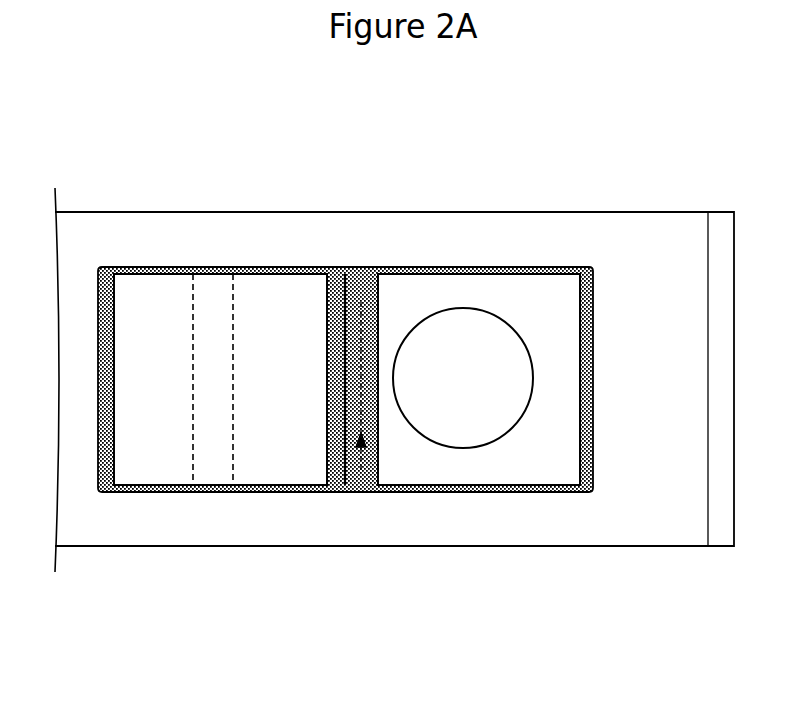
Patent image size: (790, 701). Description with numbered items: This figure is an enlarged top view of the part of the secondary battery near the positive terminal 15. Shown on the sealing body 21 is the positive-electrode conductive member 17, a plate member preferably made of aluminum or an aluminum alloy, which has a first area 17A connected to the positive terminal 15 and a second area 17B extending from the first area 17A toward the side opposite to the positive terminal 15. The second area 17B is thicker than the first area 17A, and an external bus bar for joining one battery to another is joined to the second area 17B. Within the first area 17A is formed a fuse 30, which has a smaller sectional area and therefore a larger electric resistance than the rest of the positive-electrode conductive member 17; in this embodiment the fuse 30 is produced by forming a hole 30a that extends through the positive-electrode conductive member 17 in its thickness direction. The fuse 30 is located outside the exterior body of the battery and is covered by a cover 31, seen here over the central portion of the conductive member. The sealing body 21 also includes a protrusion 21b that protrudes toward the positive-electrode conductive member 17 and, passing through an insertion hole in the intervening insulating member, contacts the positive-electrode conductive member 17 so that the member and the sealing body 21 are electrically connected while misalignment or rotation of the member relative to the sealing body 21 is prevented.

The positive terminal 15 is at (462, 340).
The positive-electrode conductive member 17 is at (245, 117).
The first area 17A is at (417, 295).
The second area 17B is at (277, 295).
The sealing body 21 is at (633, 212).
The protrusion 21b is at (208, 300).
The fuse 30 is at (364, 290).
The hole 30a is at (361, 470).
The cover 31 is at (355, 283).